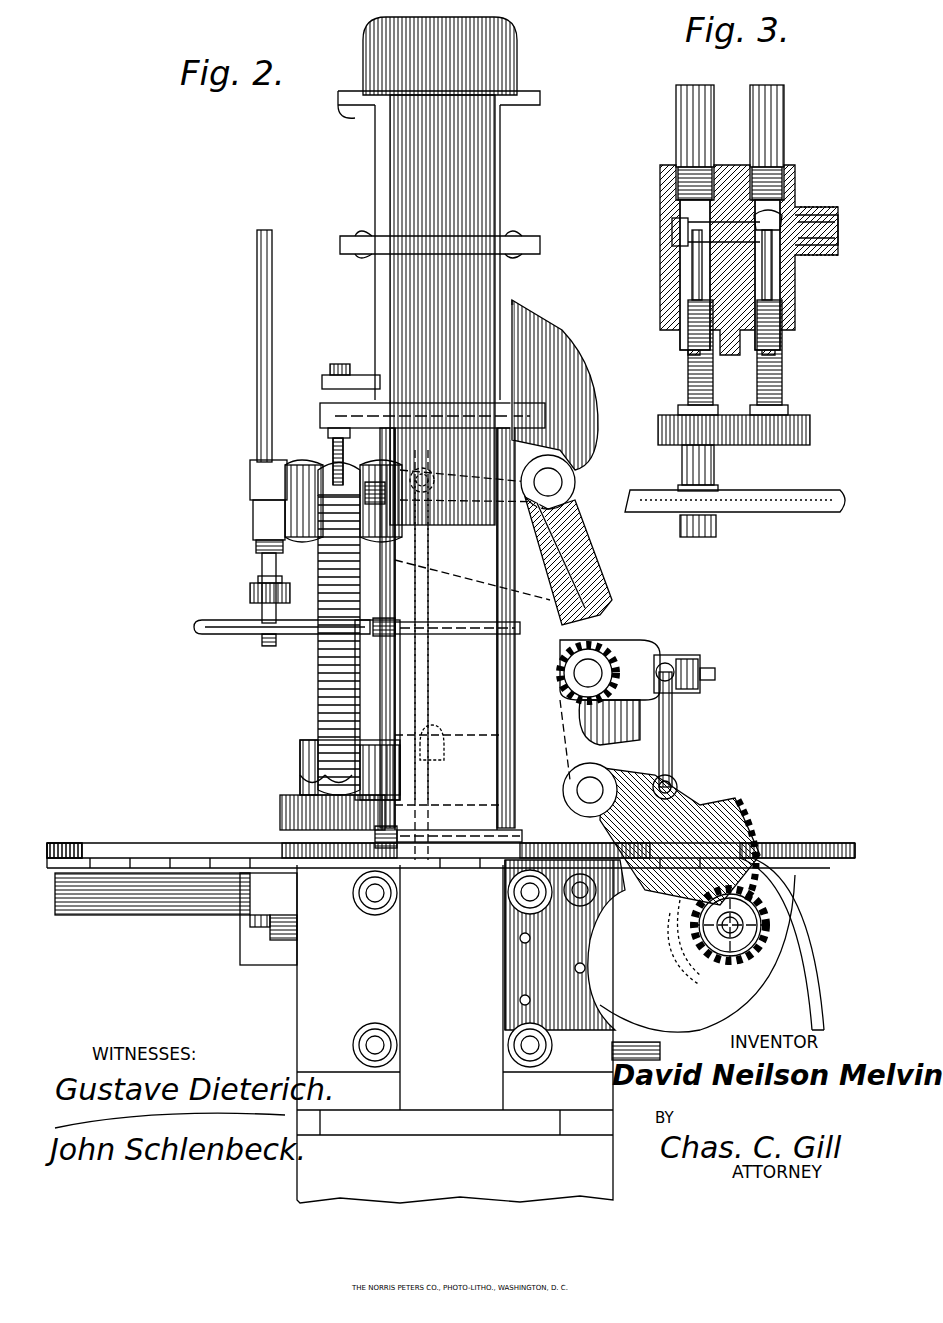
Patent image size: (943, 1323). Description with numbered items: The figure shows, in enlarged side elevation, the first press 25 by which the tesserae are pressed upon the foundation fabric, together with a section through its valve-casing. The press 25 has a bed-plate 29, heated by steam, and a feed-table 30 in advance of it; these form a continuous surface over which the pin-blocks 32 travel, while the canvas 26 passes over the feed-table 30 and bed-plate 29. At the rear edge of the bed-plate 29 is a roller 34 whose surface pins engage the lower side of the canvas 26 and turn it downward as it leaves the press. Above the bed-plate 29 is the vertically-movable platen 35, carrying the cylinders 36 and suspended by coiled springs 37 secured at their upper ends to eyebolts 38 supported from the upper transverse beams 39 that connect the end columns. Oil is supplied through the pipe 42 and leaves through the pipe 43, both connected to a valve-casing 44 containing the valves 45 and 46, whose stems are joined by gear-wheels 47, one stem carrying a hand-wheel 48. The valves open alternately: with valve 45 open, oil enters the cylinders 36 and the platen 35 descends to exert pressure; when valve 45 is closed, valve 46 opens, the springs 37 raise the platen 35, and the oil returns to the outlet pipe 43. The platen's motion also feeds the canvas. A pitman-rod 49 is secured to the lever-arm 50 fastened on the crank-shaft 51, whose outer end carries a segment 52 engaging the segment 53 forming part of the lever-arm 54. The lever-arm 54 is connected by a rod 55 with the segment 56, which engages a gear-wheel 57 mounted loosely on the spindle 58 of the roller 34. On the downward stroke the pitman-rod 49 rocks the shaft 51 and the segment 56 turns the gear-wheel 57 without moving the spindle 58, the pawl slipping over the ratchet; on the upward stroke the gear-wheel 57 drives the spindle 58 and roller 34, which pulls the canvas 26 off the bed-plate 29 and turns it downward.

In FIG. 2, the press 25 is at (432, 271).
In FIG. 2, the canvas 26 is at (60, 845).
In FIG. 2, the bed-plate 29 is at (270, 888).
In FIG. 2, the feed-table 30 is at (185, 905).
In FIG. 2, the pin-blocks 32 is at (168, 845).
In FIG. 2, the roller 34 is at (760, 975).
In FIG. 2, the platen 35 is at (280, 808).
In FIG. 2, the cylinders 36 is at (437, 709).
In FIG. 2, the coiled springs 37 is at (318, 681).
In FIG. 2, the eyebolts 38 is at (330, 435).
In FIG. 2, the upper transverse beams 39 is at (380, 293).
In FIG. 2, the pipe 42 is at (256, 318).
In FIG. 3, the pipe 42 is at (786, 123).
In FIG. 3, the pipe 43 is at (675, 123).
In FIG. 3, the valve-casing 44 is at (658, 303).
In FIG. 3, the valve 45 is at (793, 206).
In FIG. 3, the valve 46 is at (670, 230).
In FIG. 2, the gear-wheels 47 is at (252, 590).
In FIG. 3, the gear-wheels 47 is at (658, 432).
In FIG. 2, the hand-wheel 48 is at (210, 620).
In FIG. 2, the pitman-rod 49 is at (430, 676).
In FIG. 2, the lever-arm 50 is at (480, 500).
In FIG. 2, the crank-shaft 51 is at (562, 480).
In FIG. 2, the segment 52 is at (590, 570).
In FIG. 2, the segment 53 is at (612, 648).
In FIG. 2, the lever-arm 54 is at (690, 655).
In FIG. 2, the rod 55 is at (672, 727).
In FIG. 2, the segment 56 is at (700, 805).
In FIG. 2, the gear-wheel 57 is at (680, 950).
In FIG. 2, the spindle 58 is at (725, 932).